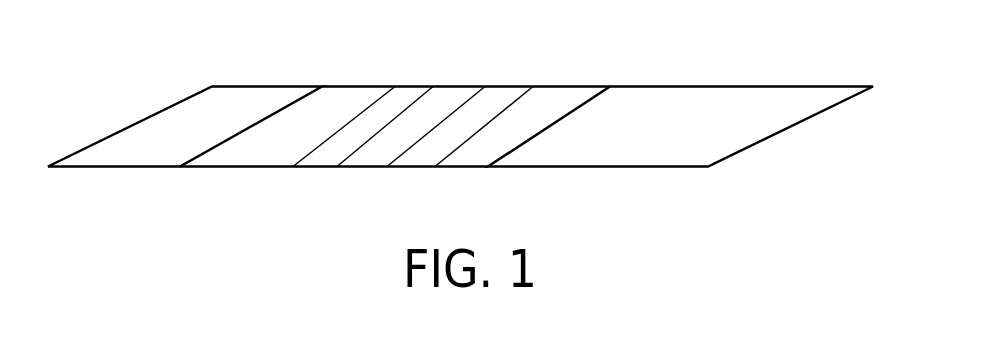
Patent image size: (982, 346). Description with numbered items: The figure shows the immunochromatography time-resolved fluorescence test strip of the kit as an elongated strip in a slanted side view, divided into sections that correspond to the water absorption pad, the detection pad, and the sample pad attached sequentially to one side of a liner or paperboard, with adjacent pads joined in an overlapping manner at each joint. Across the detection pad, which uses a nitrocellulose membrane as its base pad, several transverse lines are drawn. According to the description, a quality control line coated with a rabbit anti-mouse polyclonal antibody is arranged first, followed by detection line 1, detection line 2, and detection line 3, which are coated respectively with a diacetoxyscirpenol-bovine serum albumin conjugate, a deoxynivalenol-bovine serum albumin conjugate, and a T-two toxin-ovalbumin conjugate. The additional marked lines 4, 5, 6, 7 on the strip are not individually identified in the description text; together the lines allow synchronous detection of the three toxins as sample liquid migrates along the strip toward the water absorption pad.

The detection line 1 is at (258, 77).
The detection line 2 is at (361, 77).
The detection line 3 is at (701, 77).
The first strip line 4 is at (404, 77).
The second strip line 5 is at (443, 77).
The third strip line 6 is at (492, 77).
The fourth strip line 7 is at (539, 77).